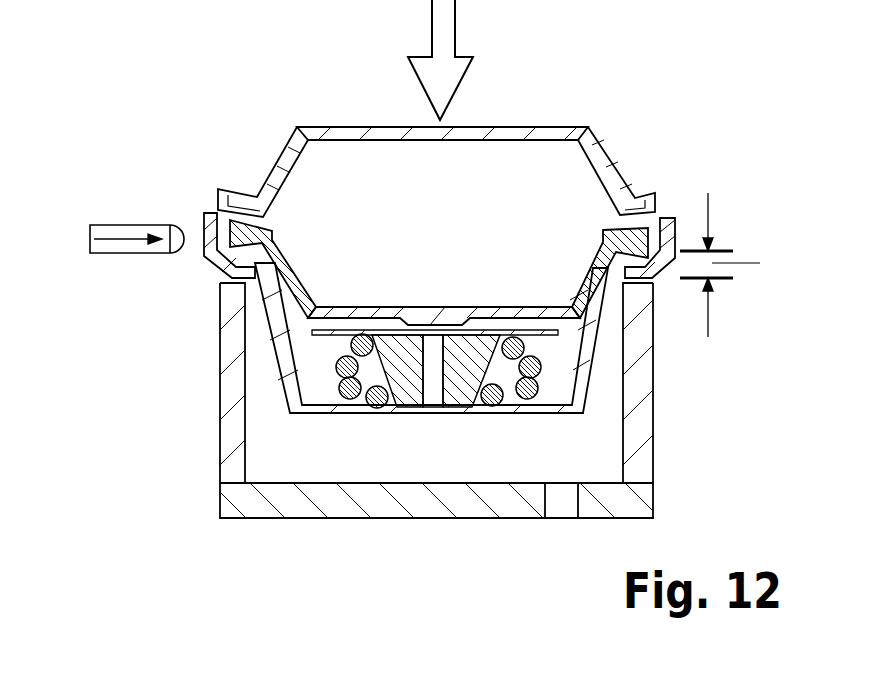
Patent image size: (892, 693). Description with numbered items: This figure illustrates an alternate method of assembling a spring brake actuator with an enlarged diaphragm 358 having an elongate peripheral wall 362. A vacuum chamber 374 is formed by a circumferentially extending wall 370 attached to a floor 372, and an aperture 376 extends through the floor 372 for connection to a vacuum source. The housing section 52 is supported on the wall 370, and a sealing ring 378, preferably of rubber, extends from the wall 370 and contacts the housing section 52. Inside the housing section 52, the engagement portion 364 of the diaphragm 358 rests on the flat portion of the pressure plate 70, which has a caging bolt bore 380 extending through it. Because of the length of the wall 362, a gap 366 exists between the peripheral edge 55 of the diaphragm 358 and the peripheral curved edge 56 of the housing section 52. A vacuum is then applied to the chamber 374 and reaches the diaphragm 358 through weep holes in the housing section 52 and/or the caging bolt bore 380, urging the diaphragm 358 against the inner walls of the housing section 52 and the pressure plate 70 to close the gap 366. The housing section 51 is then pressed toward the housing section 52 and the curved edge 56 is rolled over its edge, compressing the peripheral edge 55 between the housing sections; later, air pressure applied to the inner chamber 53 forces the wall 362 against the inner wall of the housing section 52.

The housing section 51 is at (278, 158).
The housing section 52 is at (280, 380).
The inner chamber 53 is at (451, 208).
The peripheral edge 55 is at (264, 221).
The peripheral curved edge 56 is at (200, 222).
The pressure plate 70 is at (482, 370).
The diaphragm 358 is at (478, 292).
The elongate peripheral wall 362 is at (287, 282).
The engagement portion 364 is at (335, 310).
The gap 366 is at (742, 237).
The circumferentially extending wall 370 is at (725, 343).
The floor 372 is at (412, 517).
The vacuum chamber 374 is at (350, 467).
The aperture 376 is at (555, 507).
The sealing ring 378 is at (222, 308).
The caging bolt bore 380 is at (433, 393).